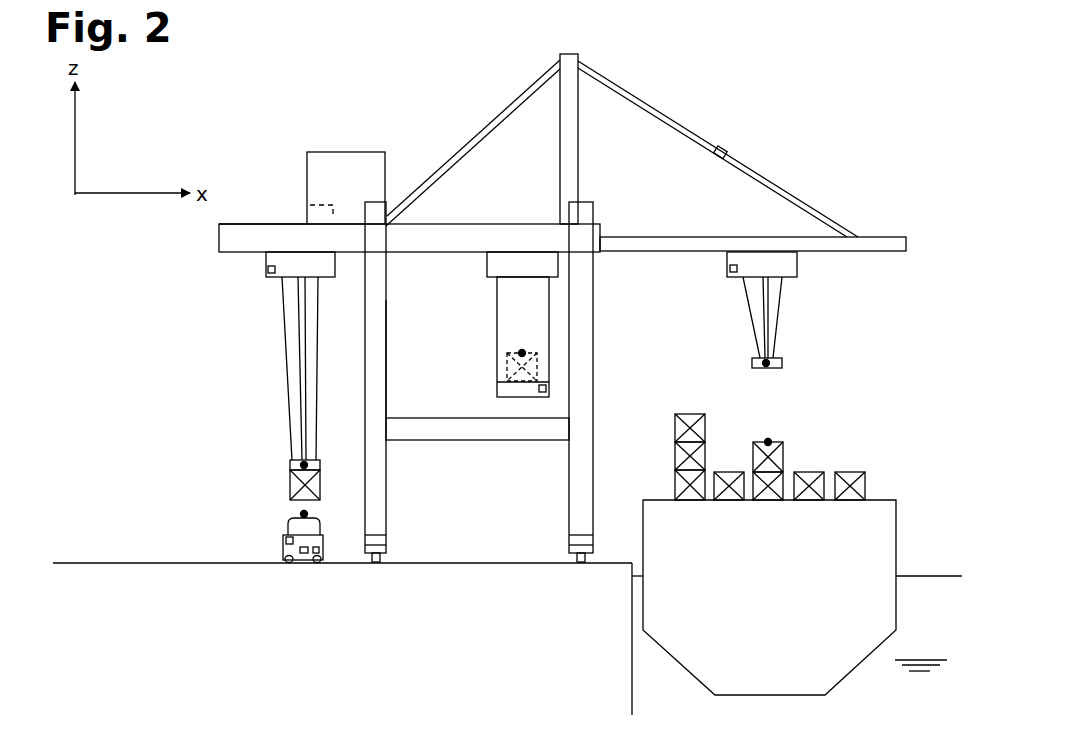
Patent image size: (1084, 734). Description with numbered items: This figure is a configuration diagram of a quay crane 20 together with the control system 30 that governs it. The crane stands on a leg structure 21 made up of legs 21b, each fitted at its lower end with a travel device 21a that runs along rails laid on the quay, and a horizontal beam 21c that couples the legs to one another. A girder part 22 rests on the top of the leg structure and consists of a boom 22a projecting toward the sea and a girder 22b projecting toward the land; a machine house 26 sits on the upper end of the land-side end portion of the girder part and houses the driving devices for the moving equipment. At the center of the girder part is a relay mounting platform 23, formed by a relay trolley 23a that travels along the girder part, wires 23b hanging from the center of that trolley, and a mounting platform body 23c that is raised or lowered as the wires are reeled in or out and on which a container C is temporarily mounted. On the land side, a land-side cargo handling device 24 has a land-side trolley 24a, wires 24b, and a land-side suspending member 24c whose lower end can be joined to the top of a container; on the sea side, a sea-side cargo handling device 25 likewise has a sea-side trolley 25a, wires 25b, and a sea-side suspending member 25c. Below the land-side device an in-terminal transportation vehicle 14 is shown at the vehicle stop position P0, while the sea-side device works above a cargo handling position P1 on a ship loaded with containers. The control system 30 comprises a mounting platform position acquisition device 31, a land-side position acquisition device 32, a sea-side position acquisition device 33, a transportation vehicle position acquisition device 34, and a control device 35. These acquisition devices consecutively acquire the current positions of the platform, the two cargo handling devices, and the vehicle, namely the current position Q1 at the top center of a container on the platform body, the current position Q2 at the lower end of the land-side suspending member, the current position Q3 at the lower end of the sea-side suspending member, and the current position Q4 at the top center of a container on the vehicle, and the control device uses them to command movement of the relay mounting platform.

The in-terminal transportation vehicle 14 is at (283, 548).
The quay crane 20 is at (460, 140).
The leg structure 21 is at (593, 300).
The travel devices 21a is at (386, 548).
The legs 21b is at (386, 376).
The horizontal beam 21c is at (456, 440).
The girder part 22 is at (480, 223).
The boom 22a is at (876, 236).
The girder 22b is at (236, 222).
The relay mounting platform 23 is at (530, 250).
The relay trolley 23a is at (487, 265).
The wires 23b is at (497, 320).
The mounting platform body 23c is at (503, 397).
The land-side cargo handling device 24 is at (284, 250).
The land-side trolley 24a is at (268, 268).
The wires 24b is at (285, 372).
The land-side suspending member 24c is at (290, 465).
The sea-side cargo handling device 25 is at (738, 251).
The sea-side trolley 25a is at (797, 268).
The wires 25b is at (782, 318).
The sea-side suspending member 25c is at (782, 368).
The machine house 26 is at (355, 152).
The control system 30 is at (292, 140).
The mounting platform position acquisition device 31 is at (543, 395).
The land-side position acquisition device 32 is at (268, 275).
The sea-side position acquisition device 33 is at (730, 268).
The transportation vehicle position acquisition device 34 is at (284, 532).
The control device 35 is at (324, 200).
The container C is at (866, 482).
The vehicle stop position P0 is at (307, 512).
The cargo handling position P1 is at (768, 437).
The current position of the relay mounting platform Q1 is at (522, 348).
The current position of the land-side cargo handling device Q2 is at (308, 460).
The current position of the sea-side cargo handling device Q3 is at (760, 358).
The current position of the in-terminal transportation vehicle Q4 is at (302, 512).